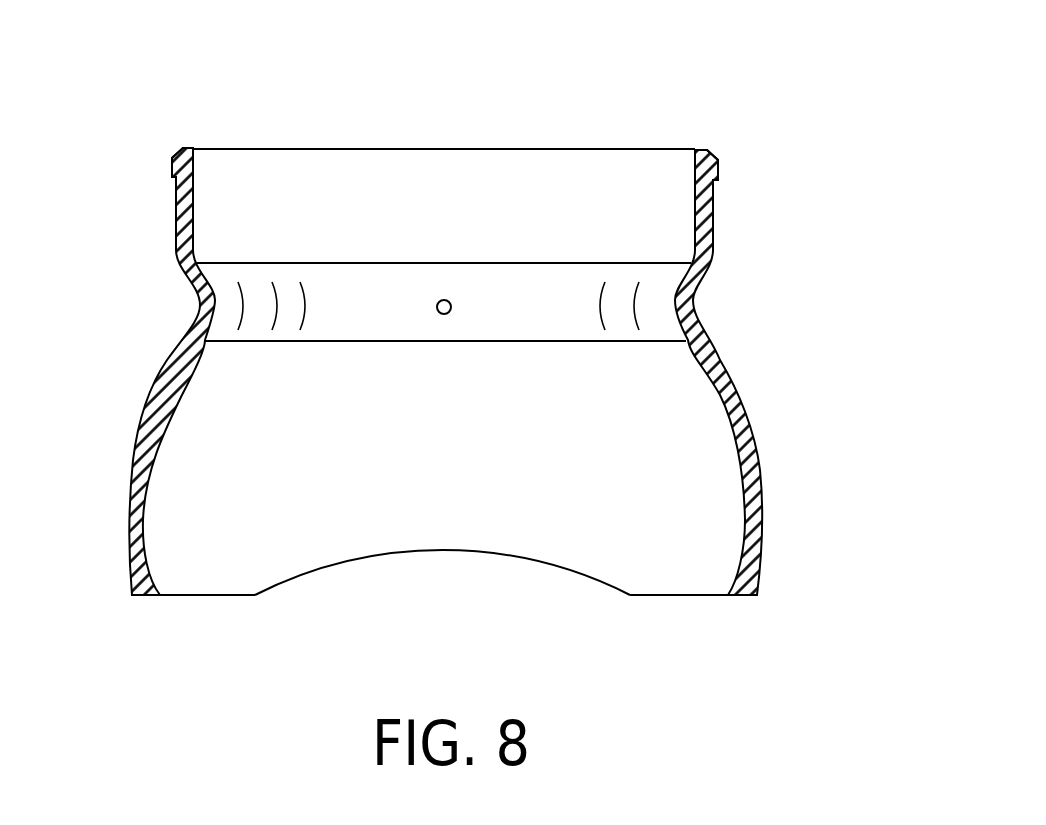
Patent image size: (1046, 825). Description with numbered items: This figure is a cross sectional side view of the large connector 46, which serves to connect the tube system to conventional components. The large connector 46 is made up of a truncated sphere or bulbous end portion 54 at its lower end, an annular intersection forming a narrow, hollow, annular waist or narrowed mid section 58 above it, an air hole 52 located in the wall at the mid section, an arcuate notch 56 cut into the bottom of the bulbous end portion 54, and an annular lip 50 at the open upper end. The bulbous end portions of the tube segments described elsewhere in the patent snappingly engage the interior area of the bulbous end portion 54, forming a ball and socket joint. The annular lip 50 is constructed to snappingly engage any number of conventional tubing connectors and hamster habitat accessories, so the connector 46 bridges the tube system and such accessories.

The large connector 46 is at (491, 347).
The annular lip 50 is at (389, 135).
The air hole 52 is at (392, 355).
The truncated sphere or bulbous end portion 54 is at (494, 371).
The arcuate notch 56 is at (442, 599).
The narrowed mid section 58 is at (500, 302).